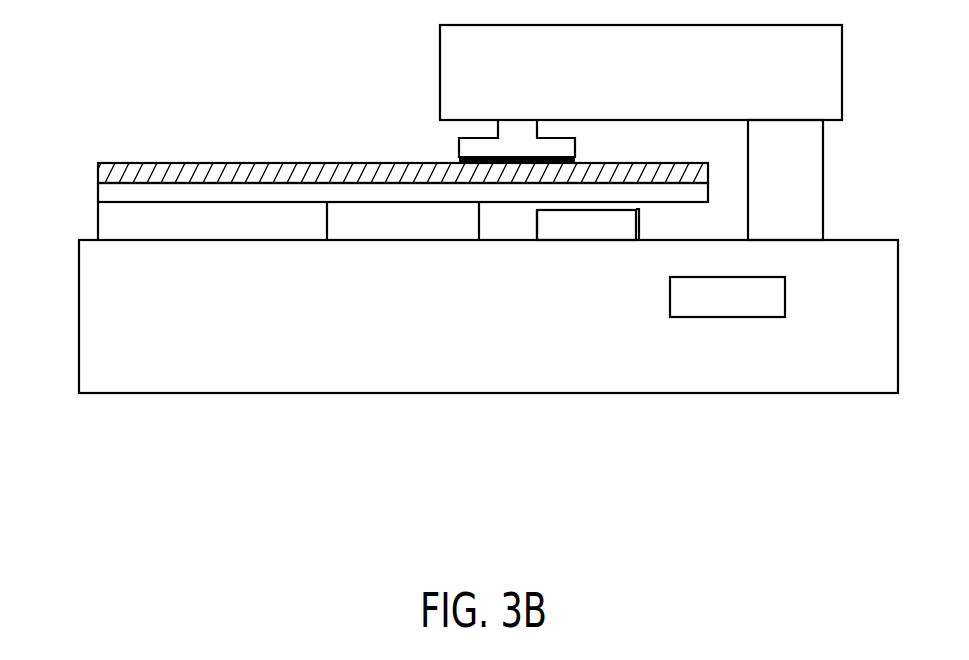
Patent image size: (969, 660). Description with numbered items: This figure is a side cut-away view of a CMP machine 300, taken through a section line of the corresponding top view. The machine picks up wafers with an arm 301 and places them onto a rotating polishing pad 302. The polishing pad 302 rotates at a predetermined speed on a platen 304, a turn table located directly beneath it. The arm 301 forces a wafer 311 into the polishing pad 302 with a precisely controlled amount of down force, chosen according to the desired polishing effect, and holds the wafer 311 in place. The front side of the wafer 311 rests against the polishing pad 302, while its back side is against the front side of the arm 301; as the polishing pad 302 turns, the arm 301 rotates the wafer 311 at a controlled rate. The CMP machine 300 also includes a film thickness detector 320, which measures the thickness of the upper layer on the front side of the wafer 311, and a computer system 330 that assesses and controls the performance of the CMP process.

The CMP machine 300 is at (873, 382).
The arm 301 is at (818, 110).
The polishing pad 302 is at (98, 172).
The platen 304 is at (98, 190).
The wafer 311 is at (452, 146).
The film thickness detector 320 is at (617, 234).
The computer system 330 is at (771, 310).